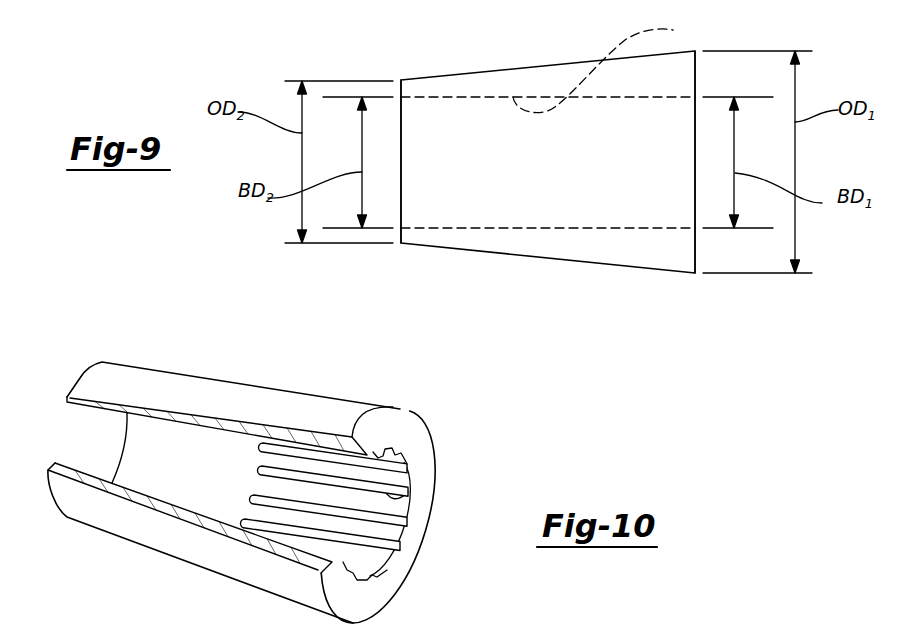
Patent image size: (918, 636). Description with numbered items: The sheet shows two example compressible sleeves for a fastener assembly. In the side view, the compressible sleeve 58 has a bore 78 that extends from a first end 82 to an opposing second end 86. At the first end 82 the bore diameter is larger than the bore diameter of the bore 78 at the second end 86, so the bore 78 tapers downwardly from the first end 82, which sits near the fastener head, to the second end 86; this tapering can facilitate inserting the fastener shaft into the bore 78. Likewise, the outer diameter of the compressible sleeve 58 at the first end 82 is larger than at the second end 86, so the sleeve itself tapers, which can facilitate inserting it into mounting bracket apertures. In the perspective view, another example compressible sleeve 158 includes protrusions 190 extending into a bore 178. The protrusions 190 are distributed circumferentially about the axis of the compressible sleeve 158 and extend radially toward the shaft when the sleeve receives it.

In FIG. 9, the compressible sleeve 58 is at (505, 59).
In FIG. 9, the bore 78 is at (610, 65).
In FIG. 9, the first end 82 is at (693, 283).
In FIG. 9, the second end 86 is at (395, 255).
In FIG. 10, the compressible sleeve 158 is at (230, 373).
In FIG. 10, the protrusions 190 is at (407, 500).
In FIG. 10, the bore 178 is at (362, 515).